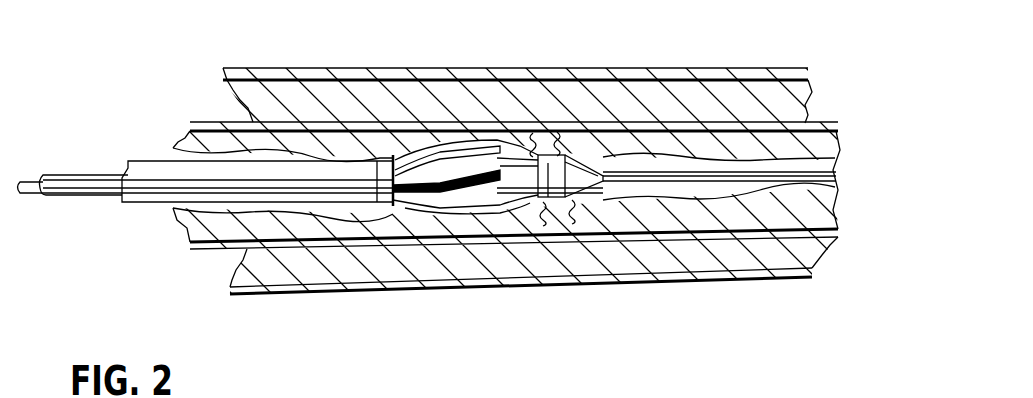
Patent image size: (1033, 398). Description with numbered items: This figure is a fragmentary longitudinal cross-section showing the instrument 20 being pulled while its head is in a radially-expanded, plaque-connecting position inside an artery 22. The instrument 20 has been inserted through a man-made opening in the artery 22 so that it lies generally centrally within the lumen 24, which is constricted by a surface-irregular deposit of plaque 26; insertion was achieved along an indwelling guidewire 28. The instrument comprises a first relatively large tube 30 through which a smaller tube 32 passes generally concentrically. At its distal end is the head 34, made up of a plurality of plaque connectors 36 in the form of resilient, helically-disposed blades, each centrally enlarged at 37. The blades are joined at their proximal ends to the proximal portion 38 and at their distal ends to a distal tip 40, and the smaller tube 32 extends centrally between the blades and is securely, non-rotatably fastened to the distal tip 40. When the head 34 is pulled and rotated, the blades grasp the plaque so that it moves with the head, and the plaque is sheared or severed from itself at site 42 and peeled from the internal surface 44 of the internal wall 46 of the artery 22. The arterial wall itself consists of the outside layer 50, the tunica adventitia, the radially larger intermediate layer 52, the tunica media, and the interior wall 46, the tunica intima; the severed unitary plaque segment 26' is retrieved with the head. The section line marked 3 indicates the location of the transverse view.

The instrument 20 is at (300, 180).
The artery 22 is at (632, 64).
The lumen 24 is at (700, 164).
The plaque 26 is at (759, 179).
The severed unitary plaque segment 26' is at (483, 199).
The guidewire 28 is at (32, 182).
The first relatively large tube 30 is at (145, 161).
The smaller tube 32 is at (84, 175).
The head 34 is at (549, 133).
The plaque connectors 36 is at (440, 140).
The central enlargement of blade 37 is at (514, 130).
The proximal portion 38 is at (384, 172).
The distal tip 40 is at (535, 205).
The site 42 is at (562, 133).
The internal surface 44 is at (650, 133).
The internal wall 46 is at (207, 122).
The outside layer 50 is at (255, 78).
The intermediate layer 52 is at (297, 98).
The section line for FIG. 3 is at (465, 63).